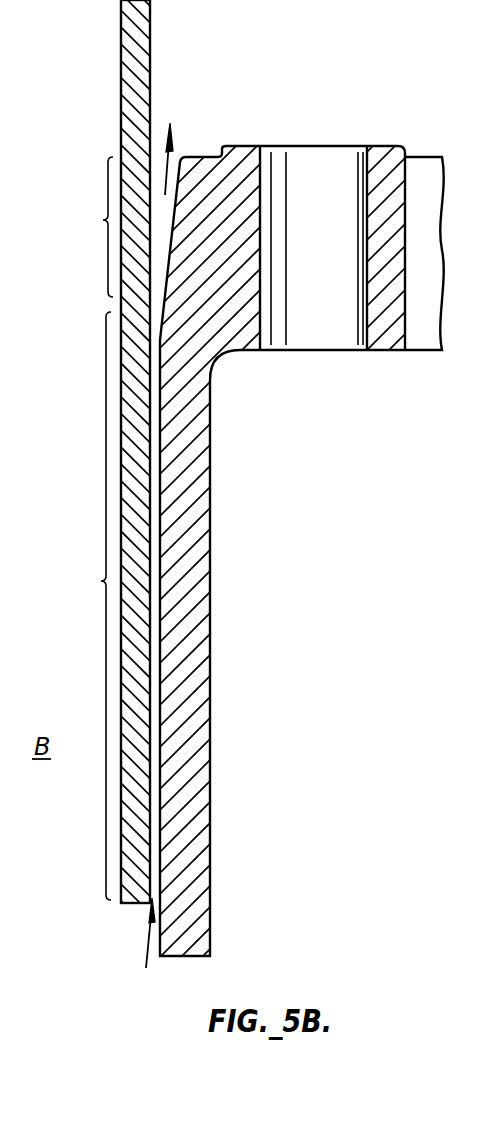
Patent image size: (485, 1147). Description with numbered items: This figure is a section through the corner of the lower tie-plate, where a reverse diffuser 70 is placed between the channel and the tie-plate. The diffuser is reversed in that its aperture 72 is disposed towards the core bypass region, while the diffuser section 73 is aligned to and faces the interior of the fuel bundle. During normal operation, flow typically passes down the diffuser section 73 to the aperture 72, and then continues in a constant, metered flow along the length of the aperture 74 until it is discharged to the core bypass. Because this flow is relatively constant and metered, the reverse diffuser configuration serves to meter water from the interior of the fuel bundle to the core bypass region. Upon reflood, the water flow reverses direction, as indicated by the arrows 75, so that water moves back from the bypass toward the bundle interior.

The diffuser 70 is at (163, 246).
The aperture 72 is at (152, 445).
The diffuser section 73 is at (91, 227).
The length of the aperture 74 is at (90, 606).
The arrows 75 is at (173, 152).